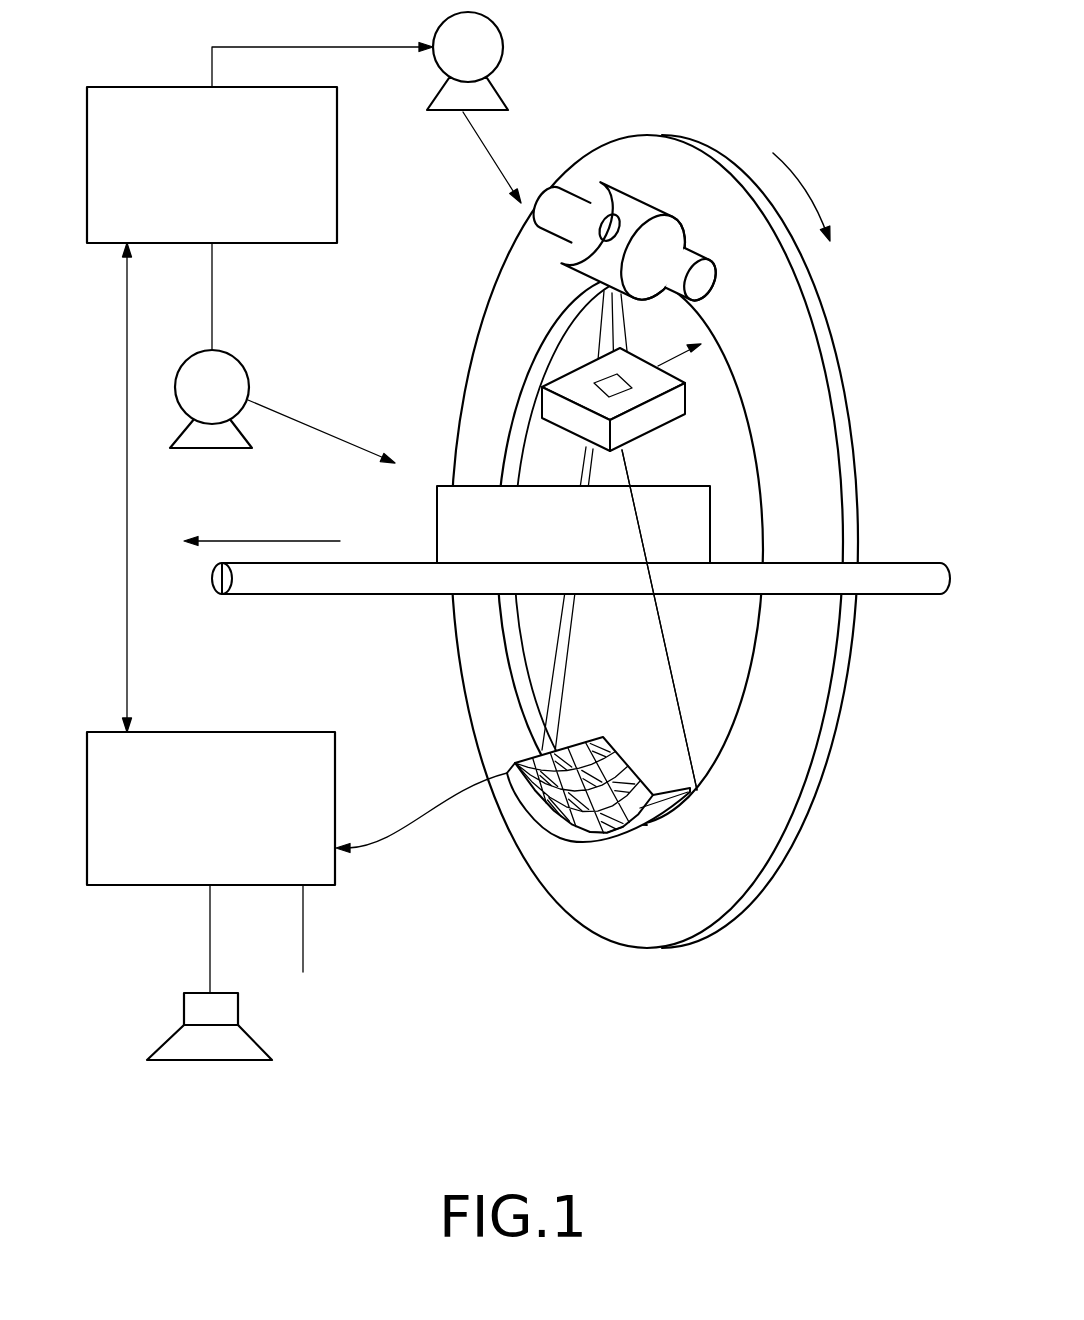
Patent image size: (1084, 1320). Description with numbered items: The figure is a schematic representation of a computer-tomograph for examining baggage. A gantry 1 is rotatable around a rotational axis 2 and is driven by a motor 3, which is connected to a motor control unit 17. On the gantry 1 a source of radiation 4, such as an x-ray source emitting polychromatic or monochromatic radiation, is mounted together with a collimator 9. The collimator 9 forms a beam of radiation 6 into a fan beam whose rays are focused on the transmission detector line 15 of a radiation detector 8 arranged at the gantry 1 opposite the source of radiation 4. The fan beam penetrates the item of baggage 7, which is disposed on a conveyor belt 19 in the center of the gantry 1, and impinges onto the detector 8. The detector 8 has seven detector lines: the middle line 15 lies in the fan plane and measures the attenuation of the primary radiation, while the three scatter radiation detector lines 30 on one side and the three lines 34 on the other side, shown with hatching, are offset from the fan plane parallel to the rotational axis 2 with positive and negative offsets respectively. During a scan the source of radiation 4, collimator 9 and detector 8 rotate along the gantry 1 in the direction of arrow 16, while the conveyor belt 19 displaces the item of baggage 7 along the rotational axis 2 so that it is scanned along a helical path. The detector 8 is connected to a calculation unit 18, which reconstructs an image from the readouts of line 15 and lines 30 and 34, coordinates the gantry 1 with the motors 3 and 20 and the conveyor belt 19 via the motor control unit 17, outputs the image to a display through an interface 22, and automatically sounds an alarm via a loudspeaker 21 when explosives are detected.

The gantry 1 is at (812, 715).
The rotational axis 2 is at (305, 541).
The motor 3 is at (503, 43).
The source of radiation 4 is at (650, 207).
The beam of radiation 6 is at (622, 337).
The item of baggage 7 is at (437, 522).
The radiation detector 8 is at (595, 798).
The collimator 9 is at (685, 403).
The transmission detector line 15 is at (557, 752).
The arrow 16 is at (803, 187).
The motor control unit 17 is at (143, 87).
The calculation unit 18 is at (240, 732).
The conveyor belt 19 is at (913, 570).
The motor 20 is at (249, 380).
The loudspeaker 21 is at (208, 1064).
The interface 22 is at (303, 933).
The scatter radiation detector line 30 is at (593, 827).
The scatter radiation detector line 34 is at (603, 737).